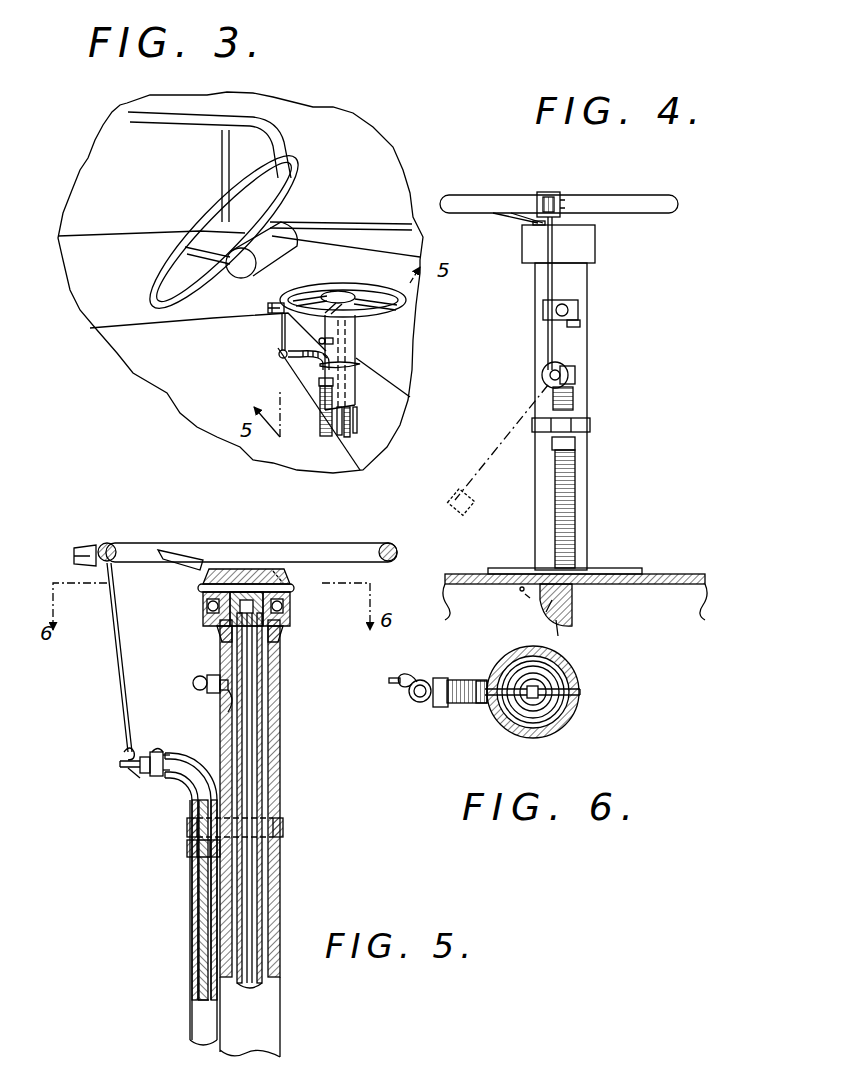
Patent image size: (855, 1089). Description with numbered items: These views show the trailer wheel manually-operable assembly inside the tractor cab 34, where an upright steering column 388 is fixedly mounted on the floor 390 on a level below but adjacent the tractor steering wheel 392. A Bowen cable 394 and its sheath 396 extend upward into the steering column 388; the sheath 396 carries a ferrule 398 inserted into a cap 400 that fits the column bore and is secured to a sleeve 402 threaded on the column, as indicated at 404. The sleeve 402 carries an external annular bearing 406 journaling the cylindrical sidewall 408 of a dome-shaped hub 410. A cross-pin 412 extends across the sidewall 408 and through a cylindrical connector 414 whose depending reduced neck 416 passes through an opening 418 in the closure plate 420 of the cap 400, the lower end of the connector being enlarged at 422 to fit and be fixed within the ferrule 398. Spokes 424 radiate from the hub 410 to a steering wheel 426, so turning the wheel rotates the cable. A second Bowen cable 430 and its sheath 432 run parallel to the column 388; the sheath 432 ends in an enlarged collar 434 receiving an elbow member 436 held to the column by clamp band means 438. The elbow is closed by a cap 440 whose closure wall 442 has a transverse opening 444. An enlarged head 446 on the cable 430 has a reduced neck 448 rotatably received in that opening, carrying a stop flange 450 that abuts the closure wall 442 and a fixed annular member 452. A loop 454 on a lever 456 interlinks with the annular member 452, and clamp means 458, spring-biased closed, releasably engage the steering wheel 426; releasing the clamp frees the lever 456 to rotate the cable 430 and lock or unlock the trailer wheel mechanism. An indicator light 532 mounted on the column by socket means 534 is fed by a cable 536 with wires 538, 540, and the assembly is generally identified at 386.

In FIG. 3, the cab 34 is at (285, 96).
In FIG. 3, the tractor steering wheel 392 is at (176, 258).
In FIG. 3, the spokes 424 is at (298, 291).
In FIG. 4, the spokes 424 is at (511, 224).
In FIG. 5, the spokes 424 is at (187, 567).
In FIG. 3, the steering wheel 426 is at (408, 304).
In FIG. 4, the steering wheel 426 is at (683, 201).
In FIG. 5, the steering wheel 426 is at (367, 547).
In FIG. 3, the clamp means 458 is at (263, 313).
In FIG. 4, the clamp means 458 is at (562, 189).
In FIG. 5, the clamp means 458 is at (85, 538).
In FIG. 3, the lever 456 is at (281, 337).
In FIG. 4, the lever 456 is at (546, 341).
In FIG. 6, the lever 456 is at (392, 676).
In FIG. 5, the lever 456 is at (127, 680).
In FIG. 3, the annular member 452 is at (283, 356).
In FIG. 6, the annular member 452 is at (410, 702).
In FIG. 5, the annular member 452 is at (122, 764).
In FIG. 3, the clamp band means 438 is at (322, 371).
In FIG. 6, the clamp band means 438 is at (480, 705).
In FIG. 5, the clamp band means 438 is at (283, 827).
In FIG. 3, the enlarged collar 434 is at (320, 383).
In FIG. 5, the enlarged collar 434 is at (188, 853).
In FIG. 3, the sheath 432 is at (326, 412).
In FIG. 4, the sheath 432 is at (576, 511).
In FIG. 5, the sheath 432 is at (200, 952).
In FIG. 3, the sheath 396 is at (338, 426).
In FIG. 4, the sheath 396 is at (542, 598).
In FIG. 5, the sheath 396 is at (262, 797).
In FIG. 3, the Bowen cable 394 is at (348, 435).
In FIG. 4, the Bowen cable 394 is at (541, 614).
In FIG. 5, the Bowen cable 394 is at (263, 773).
In FIG. 3, the steering column 388 is at (353, 400).
In FIG. 4, the steering column 388 is at (588, 473).
In FIG. 5, the steering column 388 is at (280, 858).
In FIG. 3, the control assembly 386 is at (397, 353).
In FIG. 4, the control assembly 386 is at (660, 373).
In FIG. 5, the control assembly 386 is at (314, 732).
In FIG. 3, the indicator light 532 is at (319, 341).
In FIG. 4, the indicator light 532 is at (571, 304).
In FIG. 5, the indicator light 532 is at (194, 682).
In FIG. 4, the socket means 534 is at (578, 326).
In FIG. 5, the socket means 534 is at (220, 694).
In FIG. 5, the cable 536 is at (228, 710).
In FIG. 4, the floor 390 is at (679, 573).
In FIG. 4, the second Bowen cable 430 is at (566, 626).
In FIG. 5, the second Bowen cable 430 is at (200, 972).
In FIG. 4, the wire 538 is at (521, 589).
In FIG. 4, the wire 540 is at (527, 596).
In FIG. 6, the cross-pin 412 is at (565, 688).
In FIG. 5, the cross-pin 412 is at (290, 578).
In FIG. 6, the enlarged lower end 422 is at (565, 666).
In FIG. 5, the enlarged lower end 422 is at (297, 590).
In FIG. 6, the external annular bearing 406 is at (533, 735).
In FIG. 5, the external annular bearing 406 is at (290, 605).
In FIG. 5, the cylindrical sidewall 408 is at (290, 618).
In FIG. 6, the sleeve 402 is at (525, 735).
In FIG. 5, the sleeve 402 is at (280, 627).
In FIG. 5, the threaded connection 404 is at (273, 633).
In FIG. 5, the cap 400 is at (220, 627).
In FIG. 5, the ferrule 398 is at (227, 630).
In FIG. 6, the closure plate 420 is at (562, 722).
In FIG. 5, the closure plate 420 is at (233, 583).
In FIG. 5, the opening 418 is at (243, 583).
In FIG. 6, the cylindrical connector 414 is at (575, 705).
In FIG. 5, the cylindrical connector 414 is at (253, 583).
In FIG. 5, the dome-shaped hub 410 is at (273, 573).
In FIG. 5, the reduced neck 416 is at (280, 580).
In FIG. 6, the elbow member 436 is at (460, 707).
In FIG. 5, the elbow member 436 is at (188, 793).
In FIG. 6, the cap 440 is at (440, 708).
In FIG. 5, the cap 440 is at (160, 780).
In FIG. 5, the closure wall 442 is at (150, 778).
In FIG. 5, the transverse opening 444 is at (167, 755).
In FIG. 5, the enlarged head 446 is at (173, 760).
In FIG. 5, the reduced neck 448 is at (140, 773).
In FIG. 6, the stop flange 450 is at (415, 703).
In FIG. 5, the stop flange 450 is at (155, 750).
In FIG. 6, the loop 454 is at (415, 675).
In FIG. 5, the loop 454 is at (128, 752).